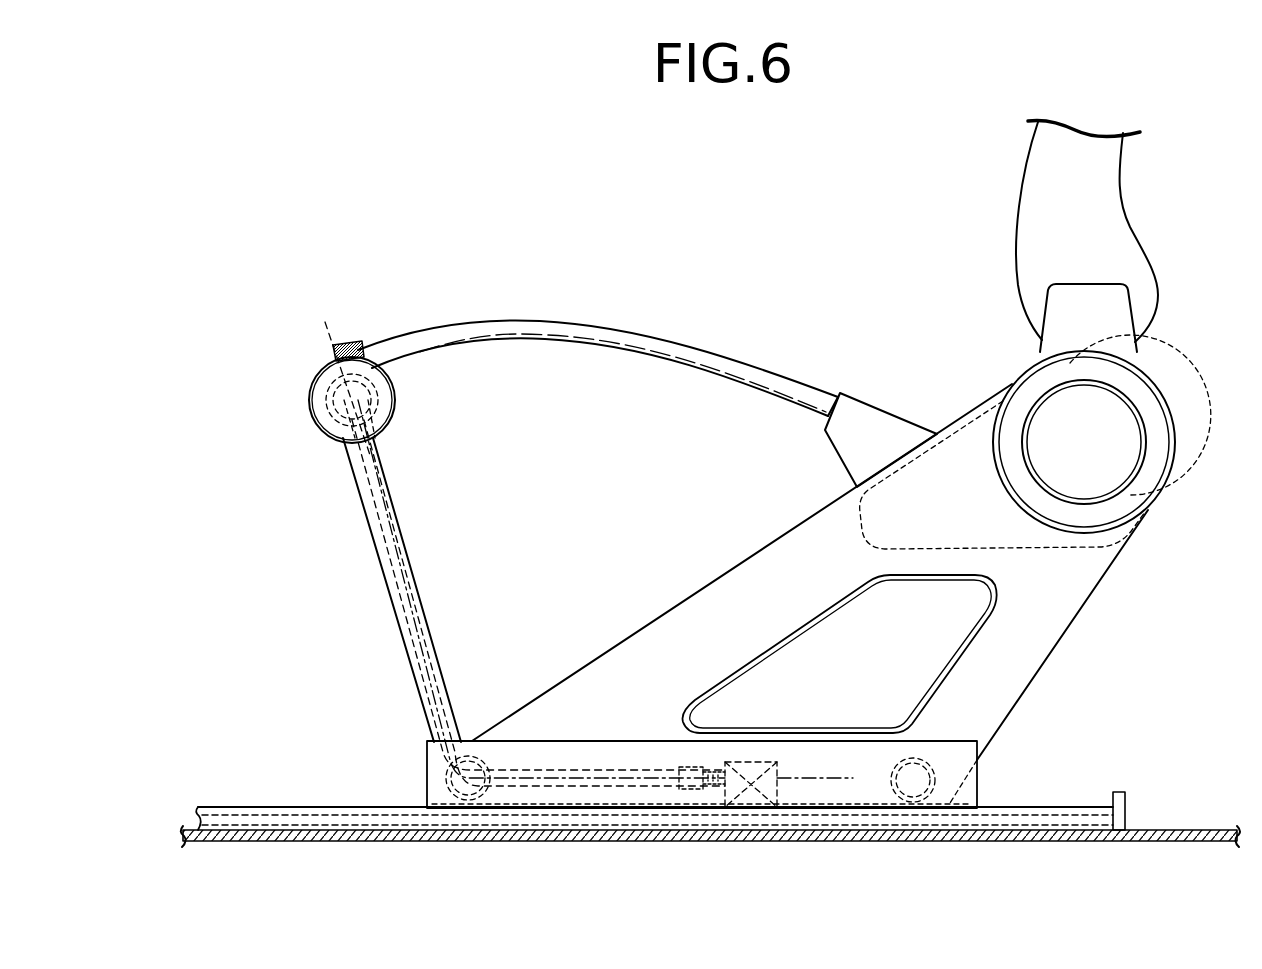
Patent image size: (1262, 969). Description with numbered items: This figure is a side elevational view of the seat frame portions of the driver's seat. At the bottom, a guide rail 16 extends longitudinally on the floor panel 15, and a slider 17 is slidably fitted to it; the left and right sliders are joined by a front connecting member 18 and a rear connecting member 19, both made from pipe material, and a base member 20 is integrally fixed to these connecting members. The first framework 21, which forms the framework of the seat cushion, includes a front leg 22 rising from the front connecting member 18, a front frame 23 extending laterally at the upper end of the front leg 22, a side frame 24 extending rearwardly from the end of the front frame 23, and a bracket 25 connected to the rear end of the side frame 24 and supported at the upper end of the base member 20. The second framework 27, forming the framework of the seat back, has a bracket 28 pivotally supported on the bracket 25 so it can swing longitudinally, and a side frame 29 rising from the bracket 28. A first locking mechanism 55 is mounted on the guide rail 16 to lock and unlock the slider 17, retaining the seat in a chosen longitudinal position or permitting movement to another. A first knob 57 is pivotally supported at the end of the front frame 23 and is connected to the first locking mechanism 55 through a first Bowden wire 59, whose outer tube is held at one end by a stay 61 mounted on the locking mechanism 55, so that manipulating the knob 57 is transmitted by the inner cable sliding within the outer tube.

The floor panel 15 is at (1180, 830).
The guide rail 16 is at (252, 807).
The slider 17 is at (963, 742).
The front connecting member 18 is at (440, 778).
The rear connecting member 19 is at (905, 765).
The base member 20 is at (752, 580).
The first framework 21 is at (517, 323).
The front leg 22 is at (508, 593).
The front frame 23 is at (376, 396).
The side frame 24 is at (628, 340).
The bracket 25 is at (888, 425).
The second framework 27 is at (1024, 183).
The bracket 28 is at (1112, 322).
The side frame 29 is at (1054, 231).
The first locking mechanism 55 is at (745, 765).
The first knob 57 is at (383, 410).
The first Bowden wire 59 is at (430, 623).
The stay 61 is at (688, 762).